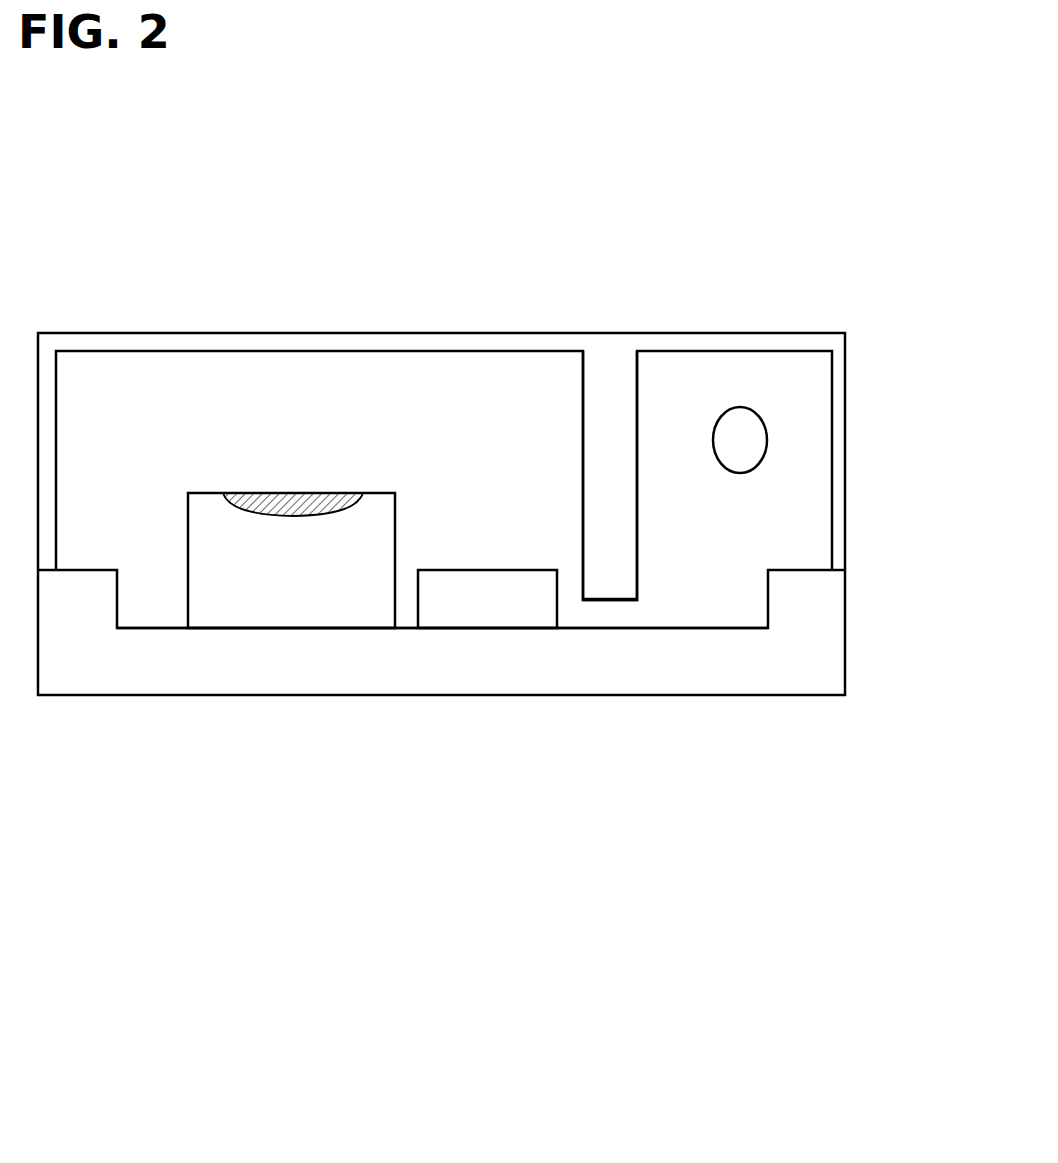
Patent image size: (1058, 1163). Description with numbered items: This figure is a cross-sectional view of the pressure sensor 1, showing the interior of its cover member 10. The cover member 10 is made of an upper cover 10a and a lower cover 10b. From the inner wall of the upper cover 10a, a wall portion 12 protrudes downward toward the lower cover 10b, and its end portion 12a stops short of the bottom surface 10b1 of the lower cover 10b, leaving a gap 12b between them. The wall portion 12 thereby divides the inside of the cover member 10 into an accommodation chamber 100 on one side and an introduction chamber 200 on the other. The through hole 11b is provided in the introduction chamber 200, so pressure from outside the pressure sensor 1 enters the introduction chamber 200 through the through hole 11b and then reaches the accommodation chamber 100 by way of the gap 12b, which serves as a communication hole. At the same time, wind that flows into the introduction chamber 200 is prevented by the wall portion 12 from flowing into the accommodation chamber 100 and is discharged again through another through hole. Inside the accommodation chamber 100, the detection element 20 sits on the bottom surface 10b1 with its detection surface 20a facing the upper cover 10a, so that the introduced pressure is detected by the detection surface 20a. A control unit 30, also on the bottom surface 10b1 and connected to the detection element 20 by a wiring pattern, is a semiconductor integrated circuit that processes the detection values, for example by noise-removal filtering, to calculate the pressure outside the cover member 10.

The pressure sensor 1 is at (730, 186).
The cover member 10 is at (360, 818).
The upper cover 10a is at (700, 333).
The lower cover 10b is at (610, 698).
The bottom surface 10b1 is at (612, 631).
The through hole 11b is at (768, 443).
The wall portion 12 is at (583, 447).
The end portion 12a is at (610, 597).
The gap 12b is at (612, 614).
The detection element 20 is at (215, 493).
The detection surface 20a is at (322, 493).
The control unit 30 is at (471, 570).
The accommodation chamber 100 is at (307, 397).
The introduction chamber 200 is at (770, 397).